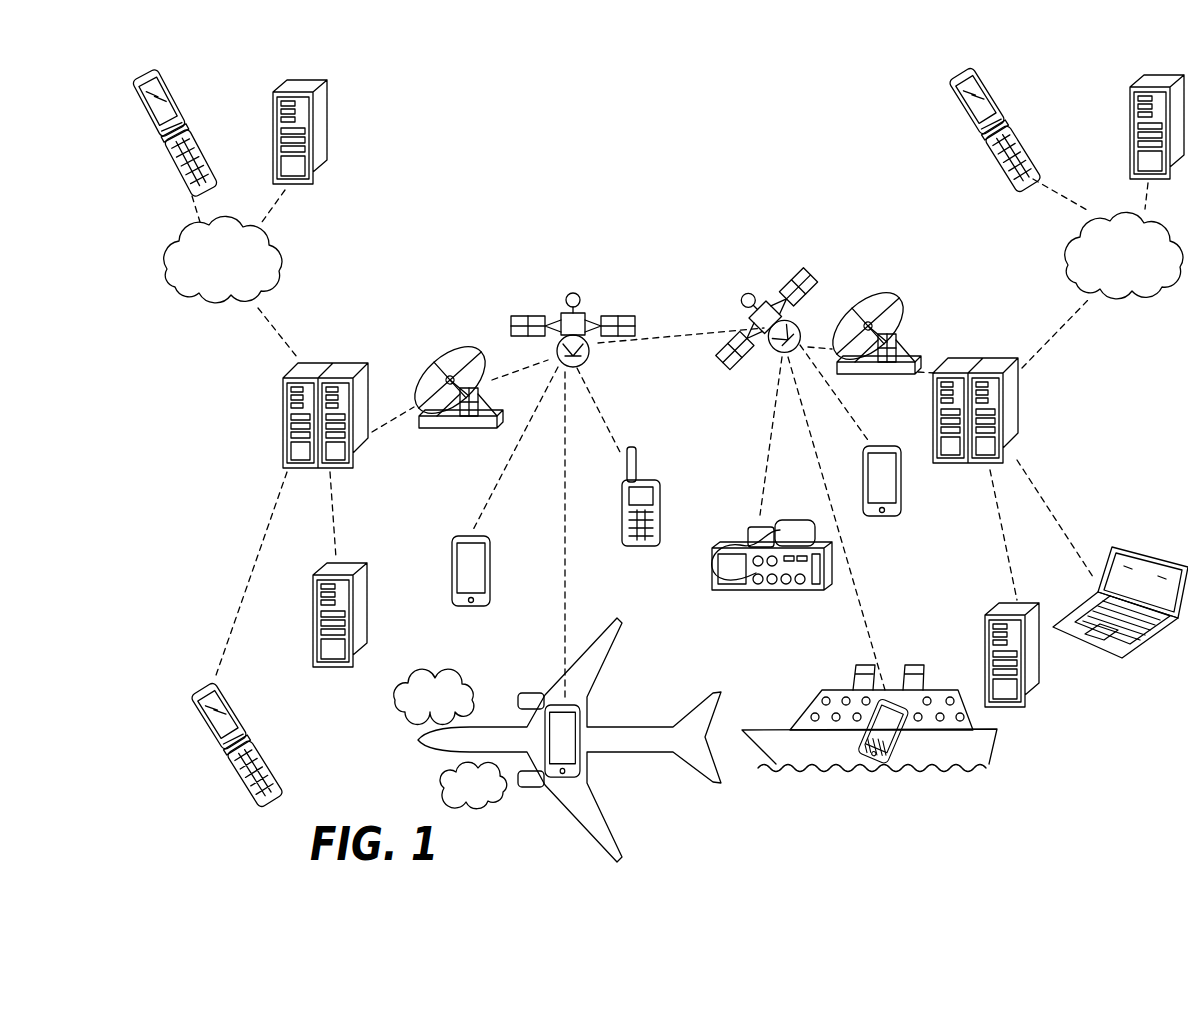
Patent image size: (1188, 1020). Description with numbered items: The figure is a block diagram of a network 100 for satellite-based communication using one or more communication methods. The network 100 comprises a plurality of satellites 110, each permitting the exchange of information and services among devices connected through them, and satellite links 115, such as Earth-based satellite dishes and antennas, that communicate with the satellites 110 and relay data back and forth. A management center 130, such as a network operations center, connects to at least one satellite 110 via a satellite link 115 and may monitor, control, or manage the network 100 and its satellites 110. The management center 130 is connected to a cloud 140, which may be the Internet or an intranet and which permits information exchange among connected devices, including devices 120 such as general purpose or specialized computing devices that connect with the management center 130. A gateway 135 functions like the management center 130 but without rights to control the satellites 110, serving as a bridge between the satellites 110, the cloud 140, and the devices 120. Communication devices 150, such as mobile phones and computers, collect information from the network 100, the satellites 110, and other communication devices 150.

The network 100 is at (799, 852).
The satellite 110 is at (572, 296).
The satellite link 115 is at (463, 350).
The device 120 is at (146, 126).
The management center 130 is at (285, 379).
The gateway 135 is at (967, 370).
The cloud 140 is at (1138, 279).
The communication device 150 is at (473, 608).